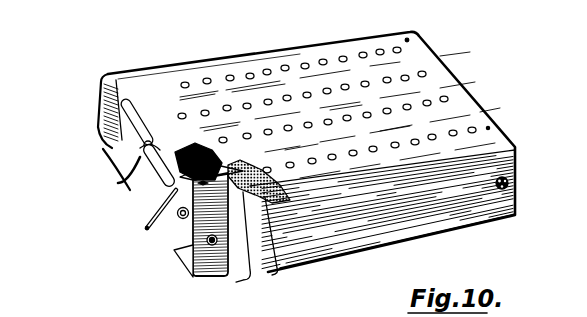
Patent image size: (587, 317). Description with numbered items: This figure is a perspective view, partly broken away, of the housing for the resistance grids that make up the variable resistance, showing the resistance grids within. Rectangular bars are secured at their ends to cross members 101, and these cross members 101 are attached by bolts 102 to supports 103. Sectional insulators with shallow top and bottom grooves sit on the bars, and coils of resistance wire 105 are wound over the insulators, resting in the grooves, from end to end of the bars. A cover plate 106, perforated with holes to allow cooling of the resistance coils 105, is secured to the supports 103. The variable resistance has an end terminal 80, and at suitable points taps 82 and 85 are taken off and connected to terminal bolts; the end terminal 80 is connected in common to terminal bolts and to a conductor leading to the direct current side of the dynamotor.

The end terminal 80 is at (118, 183).
The tap 82 is at (147, 228).
The tap 85 is at (178, 250).
The cross member 101 is at (157, 187).
The bolt 102 is at (193, 278).
The support 103 is at (100, 143).
The coil of resistance wire 105 is at (175, 143).
The cover plate 106 is at (467, 93).